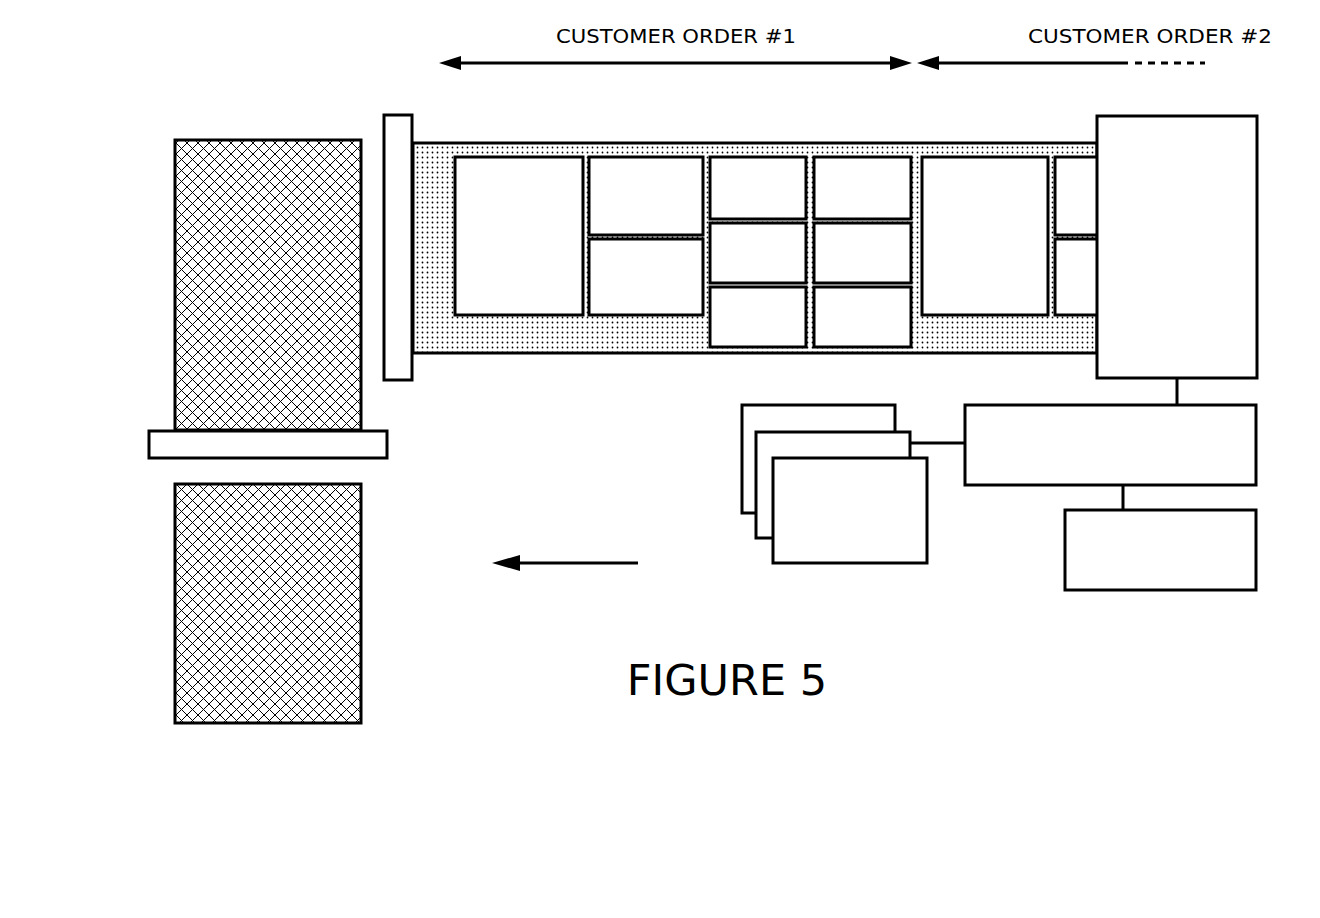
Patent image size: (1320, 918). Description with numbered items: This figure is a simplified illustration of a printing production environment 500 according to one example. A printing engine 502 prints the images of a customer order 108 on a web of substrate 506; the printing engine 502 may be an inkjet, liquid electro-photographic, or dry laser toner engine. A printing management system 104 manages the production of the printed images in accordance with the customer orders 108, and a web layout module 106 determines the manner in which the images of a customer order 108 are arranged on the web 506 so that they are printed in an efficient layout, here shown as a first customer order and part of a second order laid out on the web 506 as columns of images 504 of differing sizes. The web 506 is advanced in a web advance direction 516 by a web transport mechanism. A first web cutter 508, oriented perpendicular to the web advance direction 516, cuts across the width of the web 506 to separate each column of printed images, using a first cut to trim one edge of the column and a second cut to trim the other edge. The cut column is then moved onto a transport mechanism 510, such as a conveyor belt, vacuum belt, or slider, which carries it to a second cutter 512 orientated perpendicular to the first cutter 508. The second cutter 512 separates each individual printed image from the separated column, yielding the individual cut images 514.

The printing production environment 500 is at (593, 480).
The printing engine 502 is at (1257, 196).
The image layout on web 504 is at (660, 388).
The web of substrate 506 is at (600, 355).
The first web cutter 508 is at (403, 115).
The transport mechanism 510 is at (175, 193).
The second cutter 512 is at (387, 448).
The cut pieces 514 is at (175, 617).
The web advance direction 516 is at (608, 562).
The printing management system 104 is at (1047, 487).
The web layout module 106 is at (1148, 592).
The customer order 108 is at (838, 565).